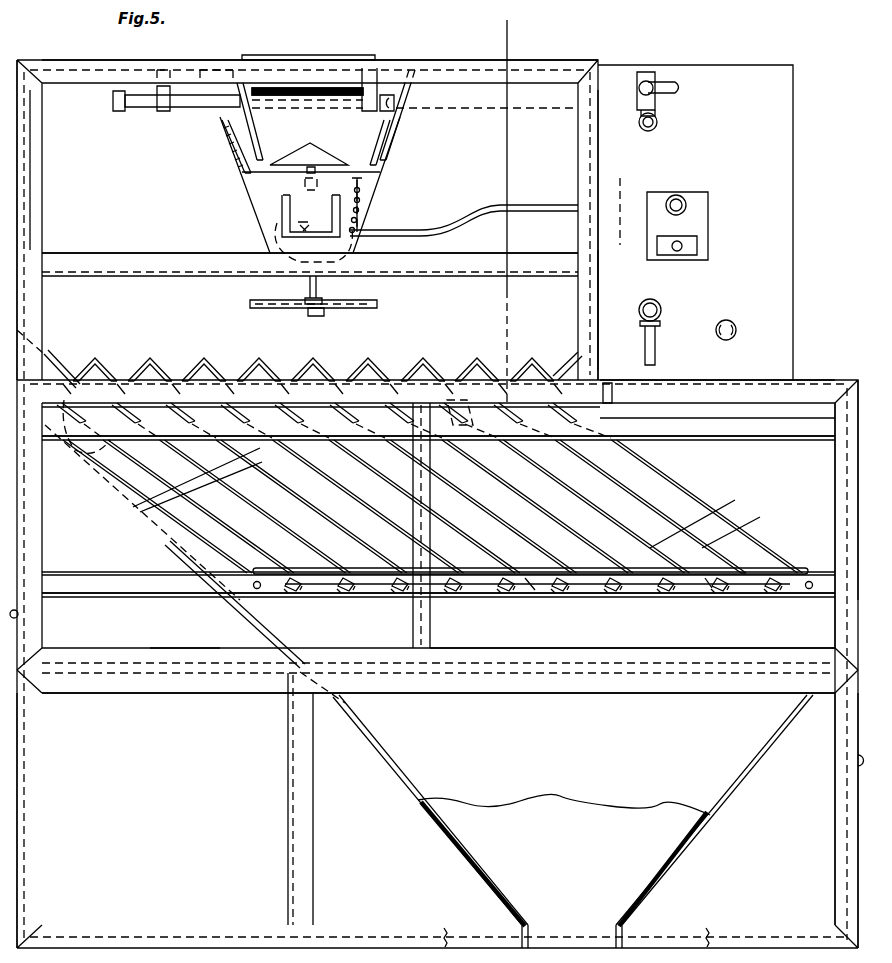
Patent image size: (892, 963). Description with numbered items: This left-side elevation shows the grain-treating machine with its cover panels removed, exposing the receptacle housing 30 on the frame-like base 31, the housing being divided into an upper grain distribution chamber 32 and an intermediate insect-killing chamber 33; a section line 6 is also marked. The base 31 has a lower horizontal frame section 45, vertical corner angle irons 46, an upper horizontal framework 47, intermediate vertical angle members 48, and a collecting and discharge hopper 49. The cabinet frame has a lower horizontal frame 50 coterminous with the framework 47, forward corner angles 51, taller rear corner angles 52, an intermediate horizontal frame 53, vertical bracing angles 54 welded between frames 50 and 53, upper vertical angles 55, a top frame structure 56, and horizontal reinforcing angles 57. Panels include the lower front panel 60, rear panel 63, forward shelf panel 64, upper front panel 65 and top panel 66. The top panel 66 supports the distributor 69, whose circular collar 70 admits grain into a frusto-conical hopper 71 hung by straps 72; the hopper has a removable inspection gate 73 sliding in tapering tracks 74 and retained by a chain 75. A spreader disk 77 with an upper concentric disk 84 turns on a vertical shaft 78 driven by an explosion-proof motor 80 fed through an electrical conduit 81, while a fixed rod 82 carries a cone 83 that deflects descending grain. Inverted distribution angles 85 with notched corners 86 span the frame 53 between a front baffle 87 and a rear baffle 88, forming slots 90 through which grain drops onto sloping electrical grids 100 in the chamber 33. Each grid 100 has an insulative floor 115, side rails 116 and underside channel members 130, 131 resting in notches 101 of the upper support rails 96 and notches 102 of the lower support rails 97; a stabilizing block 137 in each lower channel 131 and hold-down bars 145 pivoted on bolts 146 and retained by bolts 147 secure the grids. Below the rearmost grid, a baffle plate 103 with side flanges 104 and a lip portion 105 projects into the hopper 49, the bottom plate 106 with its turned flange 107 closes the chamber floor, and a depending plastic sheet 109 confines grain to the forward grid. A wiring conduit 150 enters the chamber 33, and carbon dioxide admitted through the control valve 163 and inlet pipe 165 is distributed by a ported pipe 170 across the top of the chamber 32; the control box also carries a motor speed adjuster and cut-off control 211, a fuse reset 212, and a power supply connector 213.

The section line 6- 6 is at (485, 27).
The receptacle housing 30 is at (197, 50).
The base 31 is at (832, 878).
The grain distribution chamber 32 is at (461, 176).
The insect-killing chamber 33 is at (712, 468).
The lower rectangular horizontal metal frame section 45 is at (702, 936).
The vertical corner angle irons 46 is at (30, 833).
The upper horizontal rectangular metal framework 47 is at (167, 693).
The intermediate vertical angle members 48 is at (290, 828).
The collecting and discharge hopper 49 is at (466, 866).
The lower horizontal frame 50 is at (518, 652).
The vertical angles 51 is at (835, 490).
The rear corner angles 52 is at (42, 533).
The intermediate horizontal rectangular metal frame 53 is at (733, 390).
The vertical bracing metal angles 54 is at (432, 616).
The upper vertical angles 55 is at (34, 228).
The rectangular metal frame structure 56 is at (524, 72).
The horizontal reinforcing metal angles 57 is at (146, 260).
The lower front panel 60 is at (862, 762).
The rear panel 63 is at (20, 612).
The forward horizontal shelf panel 64 is at (828, 378).
The upper front panel 65 is at (600, 290).
The top panel 66 is at (62, 59).
The distributor 69 is at (235, 185).
The circular collar 70 is at (338, 86).
The frusto-conical hopper 71 is at (230, 152).
The straps 72 is at (237, 118).
The removable inspection gate 73 is at (283, 215).
The downwardly tapering tracks 74 is at (335, 215).
The chain 75 is at (362, 200).
The spreader disk 77 is at (370, 308).
The vertical shaft 78 is at (308, 283).
The explosion-proof electric motor 80 is at (277, 235).
The explosion-proof electrical conduit 81 is at (495, 208).
The fixed rod 82 is at (305, 185).
The cone 83 is at (316, 162).
The upper concentric disk 84 is at (365, 300).
The distribution angles 85 is at (192, 364).
The notches 86 is at (172, 382).
The baffle 87 is at (567, 360).
The baffle 88 is at (55, 358).
The horizontal slots 90 is at (132, 376).
The upper grid support rails 96 is at (737, 436).
The lower grid support rails 97 is at (133, 598).
The electrical grids 100 is at (192, 504).
The notches 101 is at (120, 430).
The notches 102 is at (385, 590).
The baffle plate 103 is at (122, 500).
The side flanges 104 is at (195, 553).
The lip portion 105 is at (335, 708).
The bottom plate 106 is at (153, 665).
The flange 107 is at (233, 616).
The depending plastic sheet 109 is at (612, 395).
The grid floor 115 is at (708, 588).
The side rails 116 is at (754, 512).
The channel member 130 is at (82, 410).
The channel member 131 is at (745, 562).
The stabilizing block 137 is at (292, 592).
The hold-down bars 145 is at (533, 590).
The bolt 146 is at (256, 590).
The bolt 147 is at (810, 590).
The conduit 150 is at (660, 356).
The control valve 163 is at (650, 78).
The inlet pipe 165 is at (660, 117).
The pipe 170 is at (140, 110).
The distributor motor speed adjuster and cut-off control 211 is at (680, 195).
The fuse reset 212 is at (665, 255).
The supply connector 213 is at (737, 328).